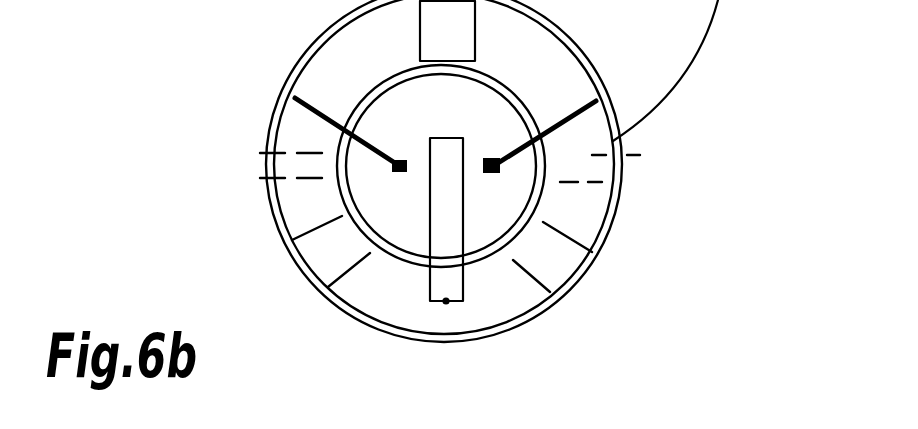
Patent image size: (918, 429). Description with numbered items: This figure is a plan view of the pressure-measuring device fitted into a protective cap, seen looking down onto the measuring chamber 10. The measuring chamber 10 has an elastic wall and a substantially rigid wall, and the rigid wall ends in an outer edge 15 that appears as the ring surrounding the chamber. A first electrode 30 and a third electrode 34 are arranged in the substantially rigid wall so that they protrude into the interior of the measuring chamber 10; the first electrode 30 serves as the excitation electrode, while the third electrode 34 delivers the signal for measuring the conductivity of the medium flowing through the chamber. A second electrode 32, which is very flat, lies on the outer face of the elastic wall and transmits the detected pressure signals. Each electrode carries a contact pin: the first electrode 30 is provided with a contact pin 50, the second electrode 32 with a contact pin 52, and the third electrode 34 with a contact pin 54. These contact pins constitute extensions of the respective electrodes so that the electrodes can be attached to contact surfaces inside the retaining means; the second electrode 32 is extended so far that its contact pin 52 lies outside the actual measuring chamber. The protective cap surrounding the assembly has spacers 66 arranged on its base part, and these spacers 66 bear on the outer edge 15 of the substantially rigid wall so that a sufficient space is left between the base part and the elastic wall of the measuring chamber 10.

The measuring chamber 10 is at (505, 198).
The outer edge 15 is at (353, 210).
The first electrode 30 is at (546, 145).
The second electrode 32 is at (455, 291).
The third electrode 34 is at (393, 173).
The contact pin 50 is at (500, 168).
The contact pin 52 is at (446, 301).
The contact pin 54 is at (322, 117).
The spacers 66 is at (563, 262).